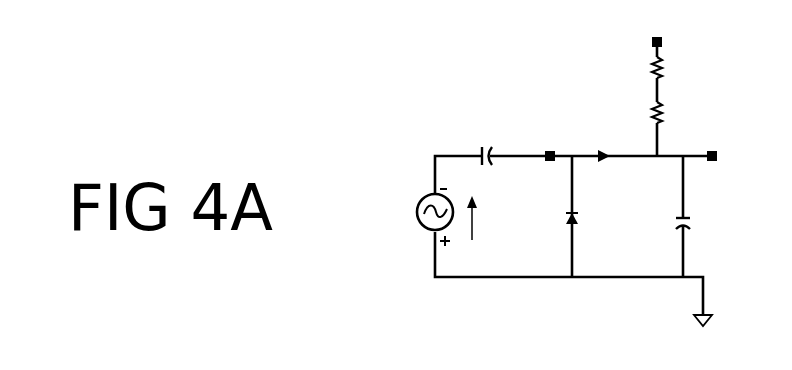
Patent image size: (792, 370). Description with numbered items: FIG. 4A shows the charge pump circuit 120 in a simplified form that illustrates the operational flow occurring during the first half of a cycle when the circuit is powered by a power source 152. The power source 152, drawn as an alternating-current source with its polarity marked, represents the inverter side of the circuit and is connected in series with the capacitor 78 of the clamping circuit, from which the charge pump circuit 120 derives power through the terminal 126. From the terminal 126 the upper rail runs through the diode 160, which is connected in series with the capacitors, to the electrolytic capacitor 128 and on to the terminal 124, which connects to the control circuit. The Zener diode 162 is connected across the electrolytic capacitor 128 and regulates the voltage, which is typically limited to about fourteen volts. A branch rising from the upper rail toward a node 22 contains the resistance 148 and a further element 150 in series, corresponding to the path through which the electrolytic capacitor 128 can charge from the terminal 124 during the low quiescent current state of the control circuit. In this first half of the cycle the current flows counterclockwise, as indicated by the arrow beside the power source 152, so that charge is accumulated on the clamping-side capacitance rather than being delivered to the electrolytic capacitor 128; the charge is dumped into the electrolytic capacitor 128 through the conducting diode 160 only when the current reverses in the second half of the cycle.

The charge pump circuit 120 is at (396, 152).
The power source 152 is at (418, 223).
The capacitor 78 is at (487, 150).
The terminal 126 is at (554, 151).
The diode 160 is at (604, 153).
The Zener diode 162 is at (575, 216).
The node 22 is at (652, 42).
The resistance 148 is at (661, 66).
The inductor 150 is at (661, 112).
The terminal 124 is at (715, 152).
The electrolytic capacitor 128 is at (690, 220).